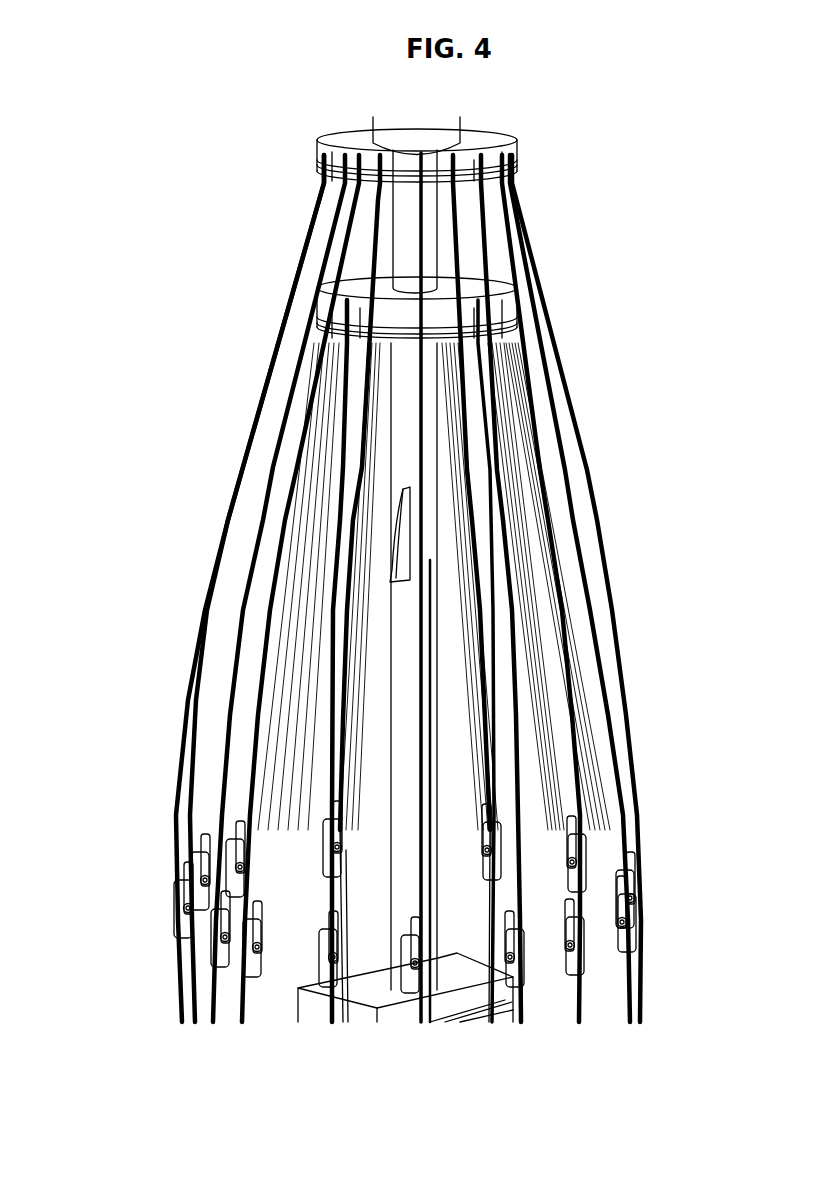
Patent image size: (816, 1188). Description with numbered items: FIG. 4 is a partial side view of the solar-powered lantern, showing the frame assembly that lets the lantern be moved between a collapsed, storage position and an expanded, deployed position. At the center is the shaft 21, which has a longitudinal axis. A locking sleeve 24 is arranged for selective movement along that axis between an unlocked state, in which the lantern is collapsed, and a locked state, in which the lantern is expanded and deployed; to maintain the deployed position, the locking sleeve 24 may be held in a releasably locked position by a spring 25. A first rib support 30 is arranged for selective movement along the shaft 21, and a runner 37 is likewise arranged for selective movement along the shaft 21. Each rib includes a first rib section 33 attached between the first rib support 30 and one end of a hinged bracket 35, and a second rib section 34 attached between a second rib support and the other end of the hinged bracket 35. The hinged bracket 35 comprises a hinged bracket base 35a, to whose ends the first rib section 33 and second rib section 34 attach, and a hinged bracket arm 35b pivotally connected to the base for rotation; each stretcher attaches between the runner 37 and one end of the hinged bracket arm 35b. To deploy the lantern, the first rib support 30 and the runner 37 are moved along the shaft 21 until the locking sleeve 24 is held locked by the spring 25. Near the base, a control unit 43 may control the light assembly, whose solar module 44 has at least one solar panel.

The shaft 21 is at (400, 227).
The locking sleeve 24 is at (387, 127).
The spring 25 is at (400, 537).
The first rib support 30 is at (490, 143).
The first rib section 33 is at (263, 395).
The second rib section 34 is at (172, 960).
The hinged bracket 35 is at (178, 890).
The hinged bracket base 35a is at (643, 928).
The hinged bracket arm 35b is at (627, 870).
The runner 37 is at (360, 297).
The control unit 43 is at (313, 999).
The solar module 44 is at (500, 1013).